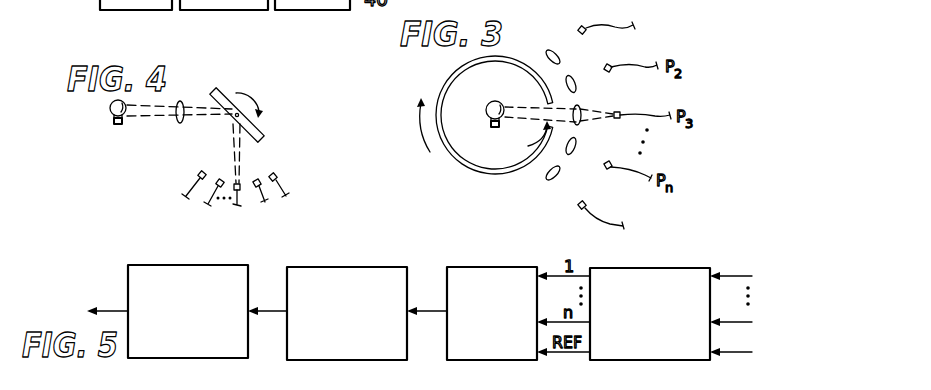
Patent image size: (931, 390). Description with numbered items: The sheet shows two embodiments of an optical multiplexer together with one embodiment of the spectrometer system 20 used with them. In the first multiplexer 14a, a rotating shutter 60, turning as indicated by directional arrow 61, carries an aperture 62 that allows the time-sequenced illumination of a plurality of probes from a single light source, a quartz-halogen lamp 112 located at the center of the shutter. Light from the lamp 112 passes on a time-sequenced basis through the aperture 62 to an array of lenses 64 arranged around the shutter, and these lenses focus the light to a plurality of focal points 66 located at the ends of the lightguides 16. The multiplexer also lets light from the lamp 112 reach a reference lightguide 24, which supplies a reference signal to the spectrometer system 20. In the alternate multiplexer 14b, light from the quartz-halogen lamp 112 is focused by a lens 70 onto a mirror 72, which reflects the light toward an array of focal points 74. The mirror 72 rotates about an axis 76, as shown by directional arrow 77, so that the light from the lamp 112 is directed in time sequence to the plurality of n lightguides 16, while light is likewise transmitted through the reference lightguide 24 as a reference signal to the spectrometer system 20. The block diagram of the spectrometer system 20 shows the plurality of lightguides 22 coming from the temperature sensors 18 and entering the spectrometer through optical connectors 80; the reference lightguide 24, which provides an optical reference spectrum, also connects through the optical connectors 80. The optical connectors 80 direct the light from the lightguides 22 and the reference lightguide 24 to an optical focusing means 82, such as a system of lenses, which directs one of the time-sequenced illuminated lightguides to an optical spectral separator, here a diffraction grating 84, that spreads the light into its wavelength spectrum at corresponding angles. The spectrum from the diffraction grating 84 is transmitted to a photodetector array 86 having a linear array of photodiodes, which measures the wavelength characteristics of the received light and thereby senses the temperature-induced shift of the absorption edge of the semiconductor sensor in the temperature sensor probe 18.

In FIG. 4, the quartz-halogen lamp 112 is at (110, 113).
In FIG. 3, the quartz-halogen lamp 112 is at (486, 122).
In FIG. 4, the lens 70 is at (181, 124).
In FIG. 4, the mirror 72 is at (217, 92).
In FIG. 4, the directional arrow 77 is at (249, 95).
In FIG. 4, the axis 76 is at (262, 113).
In FIG. 4, the optical multiplexer 14b is at (250, 85).
In FIG. 4, the reference lightguide 24 is at (193, 187).
In FIG. 3, the reference lightguide 24 is at (600, 216).
In FIG. 5, the reference lightguide 24 is at (740, 356).
In FIG. 4, the lightguides 16 is at (284, 189).
In FIG. 4, the focal points 74 is at (275, 175).
In FIG. 3, the rotating shutter 60 is at (453, 73).
In FIG. 3, the directional arrow 61 is at (421, 131).
In FIG. 3, the aperture 62 is at (527, 138).
In FIG. 3, the optical multiplexer 14a is at (450, 168).
In FIG. 3, the array of lenses 64 is at (549, 51).
In FIG. 3, the focal points 66 is at (582, 26).
In FIG. 3, the temperature sensors 18 is at (614, 27).
In FIG. 5, the photodetector array 86 is at (136, 265).
In FIG. 5, the diffraction grating 84 is at (334, 267).
In FIG. 5, the optical focusing means 82 is at (495, 267).
In FIG. 5, the optical connectors 80 is at (649, 268).
In FIG. 5, the spectrometer system 20 is at (378, 246).
In FIG. 5, the lightguides 22 is at (756, 266).